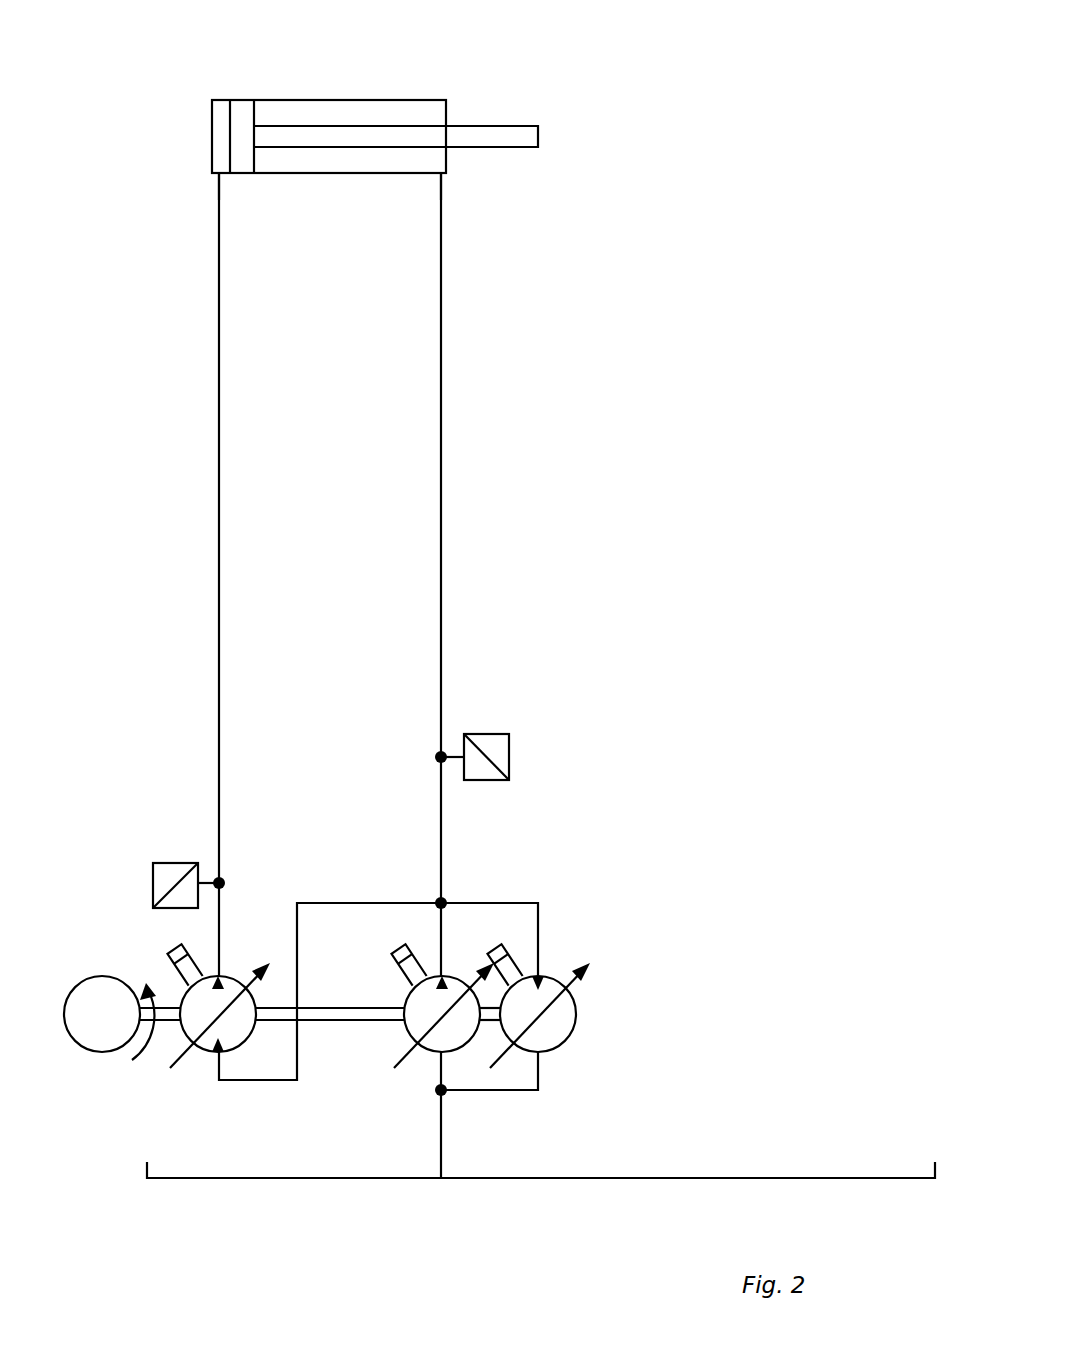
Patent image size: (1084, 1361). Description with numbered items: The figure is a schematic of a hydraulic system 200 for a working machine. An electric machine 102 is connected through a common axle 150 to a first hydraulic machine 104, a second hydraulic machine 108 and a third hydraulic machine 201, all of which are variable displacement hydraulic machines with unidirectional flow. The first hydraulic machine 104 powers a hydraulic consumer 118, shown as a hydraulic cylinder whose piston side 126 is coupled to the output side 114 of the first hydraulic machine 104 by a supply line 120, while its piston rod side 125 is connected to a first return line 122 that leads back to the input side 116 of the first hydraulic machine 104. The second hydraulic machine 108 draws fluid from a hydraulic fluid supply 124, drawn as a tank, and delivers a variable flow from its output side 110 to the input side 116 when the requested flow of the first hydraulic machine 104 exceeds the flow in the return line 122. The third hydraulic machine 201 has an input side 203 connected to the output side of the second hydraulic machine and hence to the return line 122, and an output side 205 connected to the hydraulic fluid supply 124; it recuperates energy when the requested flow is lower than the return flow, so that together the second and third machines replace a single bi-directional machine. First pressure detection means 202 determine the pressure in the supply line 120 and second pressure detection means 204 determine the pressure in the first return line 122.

The electric machine 102 is at (103, 977).
The first hydraulic machine 104 is at (197, 1050).
The second hydraulic machine 108 is at (412, 990).
The output side of the second hydraulic machine 110 is at (441, 976).
The output side of the first hydraulic machine 114 is at (219, 976).
The input side of the first hydraulic machine 116 is at (215, 1053).
The hydraulic consumer 118 is at (328, 100).
The supply line 120 is at (219, 539).
The first return line 122 is at (441, 539).
The hydraulic fluid supply 124 is at (403, 1178).
The piston rod side 125 is at (447, 155).
The piston side 126 is at (233, 157).
The common axle 150 is at (353, 1023).
The hydraulic system 200 is at (652, 202).
The third hydraulic machine 201 is at (577, 1000).
The first pressure detection means 202 is at (175, 863).
The input side of the third hydraulic machine 203 is at (535, 976).
The second pressure detection means 204 is at (487, 734).
The output side of the third hydraulic machine 205 is at (541, 1053).